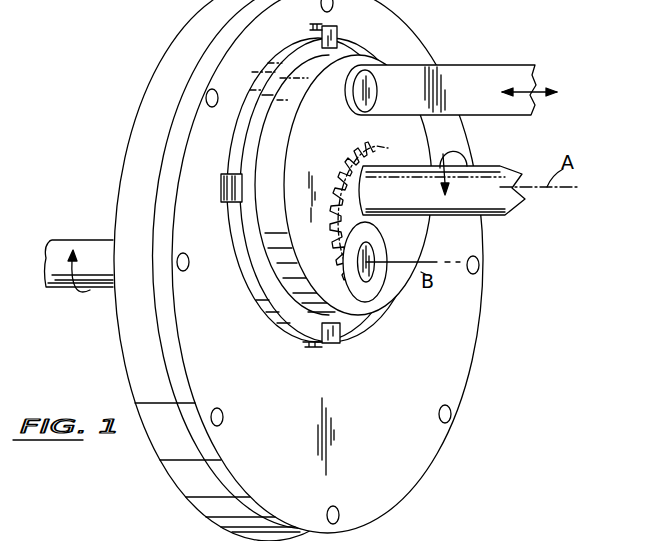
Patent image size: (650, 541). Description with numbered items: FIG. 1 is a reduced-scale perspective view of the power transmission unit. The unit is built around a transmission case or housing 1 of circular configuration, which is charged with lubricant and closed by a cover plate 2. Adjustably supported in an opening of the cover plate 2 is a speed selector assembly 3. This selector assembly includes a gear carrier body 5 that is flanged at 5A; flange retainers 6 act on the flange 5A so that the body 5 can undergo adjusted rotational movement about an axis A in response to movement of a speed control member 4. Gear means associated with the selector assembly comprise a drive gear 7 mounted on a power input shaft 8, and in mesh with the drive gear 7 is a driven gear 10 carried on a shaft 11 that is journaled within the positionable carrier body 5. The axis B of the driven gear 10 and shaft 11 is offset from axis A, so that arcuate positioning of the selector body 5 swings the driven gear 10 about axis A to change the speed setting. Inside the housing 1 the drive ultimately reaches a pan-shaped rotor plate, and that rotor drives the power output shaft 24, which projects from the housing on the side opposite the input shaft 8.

The transmission case or housing 1 is at (148, 89).
The cover plate 2 is at (470, 326).
The speed selector assembly 3 is at (246, 289).
The speed control member 4 is at (478, 72).
The gear carrier body 5 is at (342, 145).
The flange 5A is at (288, 47).
The flange retainers 6 is at (337, 30).
The drive gear 7 is at (375, 158).
The power input shaft 8 is at (487, 168).
The driven gear 10 is at (378, 240).
The shaft 11 is at (369, 252).
The power output shaft 24 is at (68, 287).